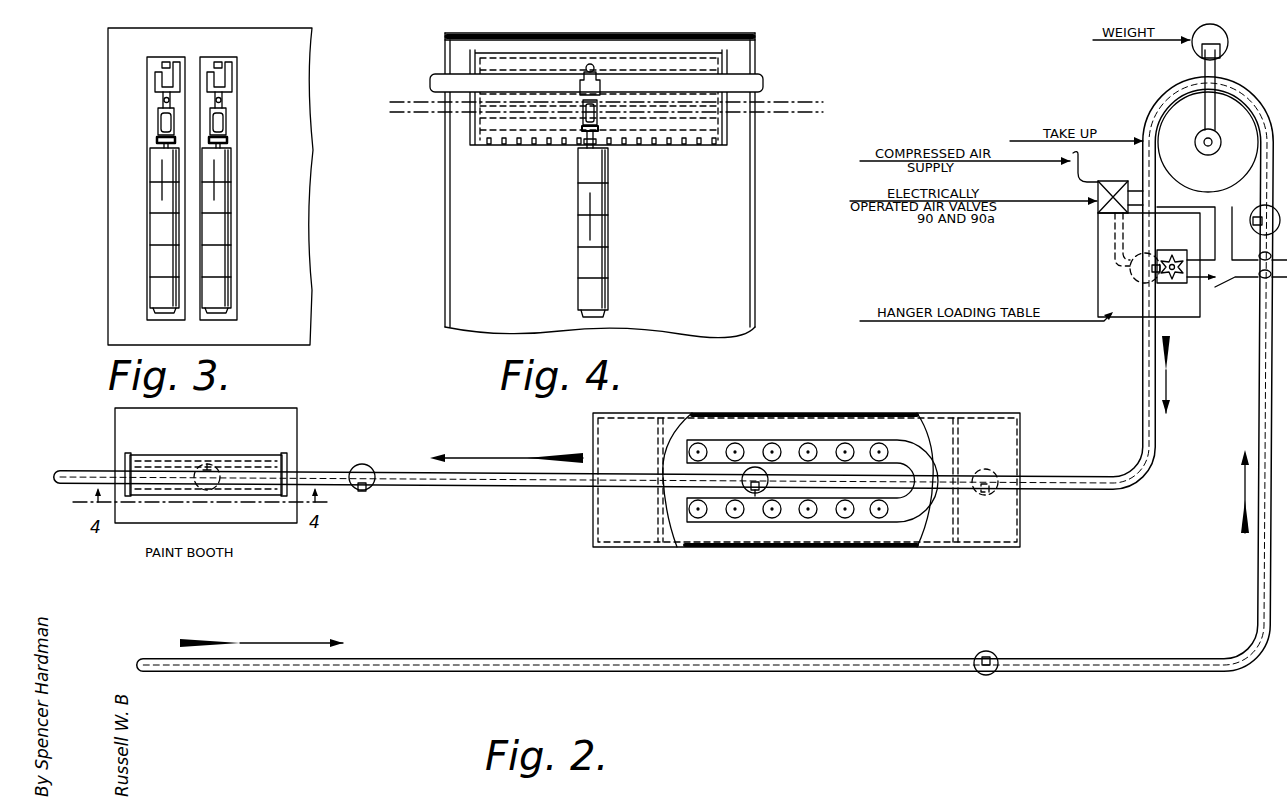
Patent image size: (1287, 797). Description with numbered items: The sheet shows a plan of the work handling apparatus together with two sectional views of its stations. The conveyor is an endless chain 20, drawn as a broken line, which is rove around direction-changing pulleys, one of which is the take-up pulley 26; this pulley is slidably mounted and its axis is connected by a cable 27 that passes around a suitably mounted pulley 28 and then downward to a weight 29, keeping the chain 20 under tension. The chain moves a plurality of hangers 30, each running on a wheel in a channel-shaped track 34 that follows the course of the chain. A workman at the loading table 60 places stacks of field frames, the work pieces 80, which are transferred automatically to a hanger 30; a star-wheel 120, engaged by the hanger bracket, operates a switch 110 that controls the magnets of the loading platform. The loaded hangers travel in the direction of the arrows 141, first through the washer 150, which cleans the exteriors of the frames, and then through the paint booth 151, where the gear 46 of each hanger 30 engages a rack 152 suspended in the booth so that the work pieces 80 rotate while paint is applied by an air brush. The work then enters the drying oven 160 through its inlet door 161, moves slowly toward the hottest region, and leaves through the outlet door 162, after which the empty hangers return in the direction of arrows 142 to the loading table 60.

In FIG. 4, the endless chain 20 is at (405, 101).
In FIG. 2, the endless chain 20 is at (1143, 352).
In FIG. 2, the take-up pulley 26 is at (1232, 112).
In FIG. 2, the cable 27 is at (1218, 74).
In FIG. 2, the pulley 28 is at (1222, 51).
In FIG. 2, the weight 29 is at (1228, 35).
In FIG. 3, the hanger 30 is at (150, 118).
In FIG. 4, the hanger 30 is at (602, 87).
In FIG. 2, the hanger 30 is at (207, 490).
In FIG. 3, the track 34 is at (158, 75).
In FIG. 4, the track 34 is at (762, 77).
In FIG. 4, the gear 46 is at (580, 148).
In FIG. 2, the gear 46 is at (210, 465).
In FIG. 2, the loading table 60 is at (1098, 257).
In FIG. 3, the work pieces 80 is at (153, 190).
In FIG. 4, the work pieces 80 is at (610, 233).
In FIG. 2, the switch 110 is at (1172, 284).
In FIG. 2, the star-wheel 120 is at (1172, 252).
In FIG. 2, the arrows 141 is at (1172, 373).
In FIG. 2, the arrows 142 is at (1243, 485).
In FIG. 2, the washer 150 is at (860, 547).
In FIG. 4, the paint booth 151 is at (448, 42).
In FIG. 2, the paint booth 151 is at (287, 433).
In FIG. 4, the rack 152 is at (673, 145).
In FIG. 2, the rack 152 is at (150, 470).
In FIG. 3, the drying oven 160 is at (108, 43).
In FIG. 3, the inlet door 161 is at (230, 100).
In FIG. 3, the outlet door 162 is at (157, 102).